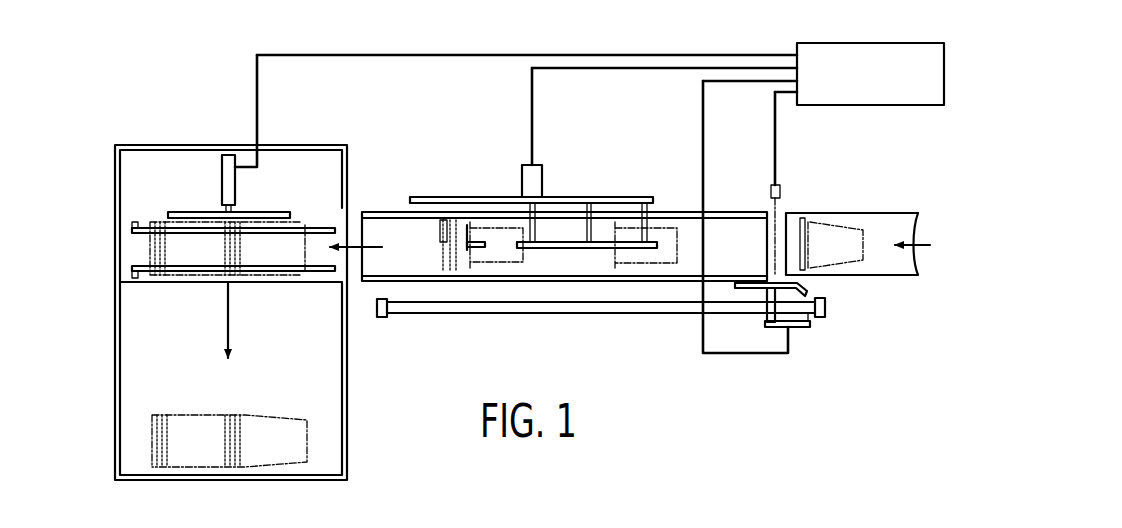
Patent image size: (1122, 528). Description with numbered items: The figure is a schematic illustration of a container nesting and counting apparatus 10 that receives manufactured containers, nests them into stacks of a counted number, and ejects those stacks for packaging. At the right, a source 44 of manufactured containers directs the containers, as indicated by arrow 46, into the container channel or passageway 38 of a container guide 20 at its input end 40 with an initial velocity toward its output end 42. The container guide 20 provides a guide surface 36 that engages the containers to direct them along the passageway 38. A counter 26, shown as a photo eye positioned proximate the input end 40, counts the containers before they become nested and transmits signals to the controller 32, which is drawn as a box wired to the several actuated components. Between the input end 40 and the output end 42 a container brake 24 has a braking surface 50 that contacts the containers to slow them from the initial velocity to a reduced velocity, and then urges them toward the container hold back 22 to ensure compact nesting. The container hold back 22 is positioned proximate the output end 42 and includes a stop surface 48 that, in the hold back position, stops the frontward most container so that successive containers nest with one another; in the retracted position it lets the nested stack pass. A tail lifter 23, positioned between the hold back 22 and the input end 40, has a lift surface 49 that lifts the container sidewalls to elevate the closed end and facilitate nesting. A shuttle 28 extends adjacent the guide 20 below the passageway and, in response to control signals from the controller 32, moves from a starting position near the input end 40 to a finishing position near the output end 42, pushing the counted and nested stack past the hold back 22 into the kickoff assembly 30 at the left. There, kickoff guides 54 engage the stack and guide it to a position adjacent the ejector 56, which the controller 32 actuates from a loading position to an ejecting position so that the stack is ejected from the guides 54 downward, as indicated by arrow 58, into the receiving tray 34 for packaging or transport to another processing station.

The container nesting and counting apparatus 10 is at (155, 84).
The container guide 20 is at (717, 211).
The container hold back 22 is at (446, 232).
The tail lifter 23 is at (476, 250).
The container brake 24 is at (568, 200).
The counter 26 is at (781, 190).
The shuttle 28 is at (807, 292).
The kickoff assembly 30 is at (160, 211).
The controller 32 is at (830, 43).
The receiving tray 34 is at (115, 398).
The guide surface 36 is at (675, 220).
The container channel or passageway 38 is at (550, 265).
The input end 40 is at (762, 206).
The output end 42 is at (372, 205).
The source of manufactured containers 44 is at (850, 213).
The arrow 46 is at (930, 245).
The stop surface 48 is at (450, 272).
The lift surface 49 is at (473, 230).
The braking surface 50 is at (660, 248).
The kickoff guides 54 is at (133, 222).
The ejector 56 is at (222, 182).
The arrow 58 is at (228, 315).